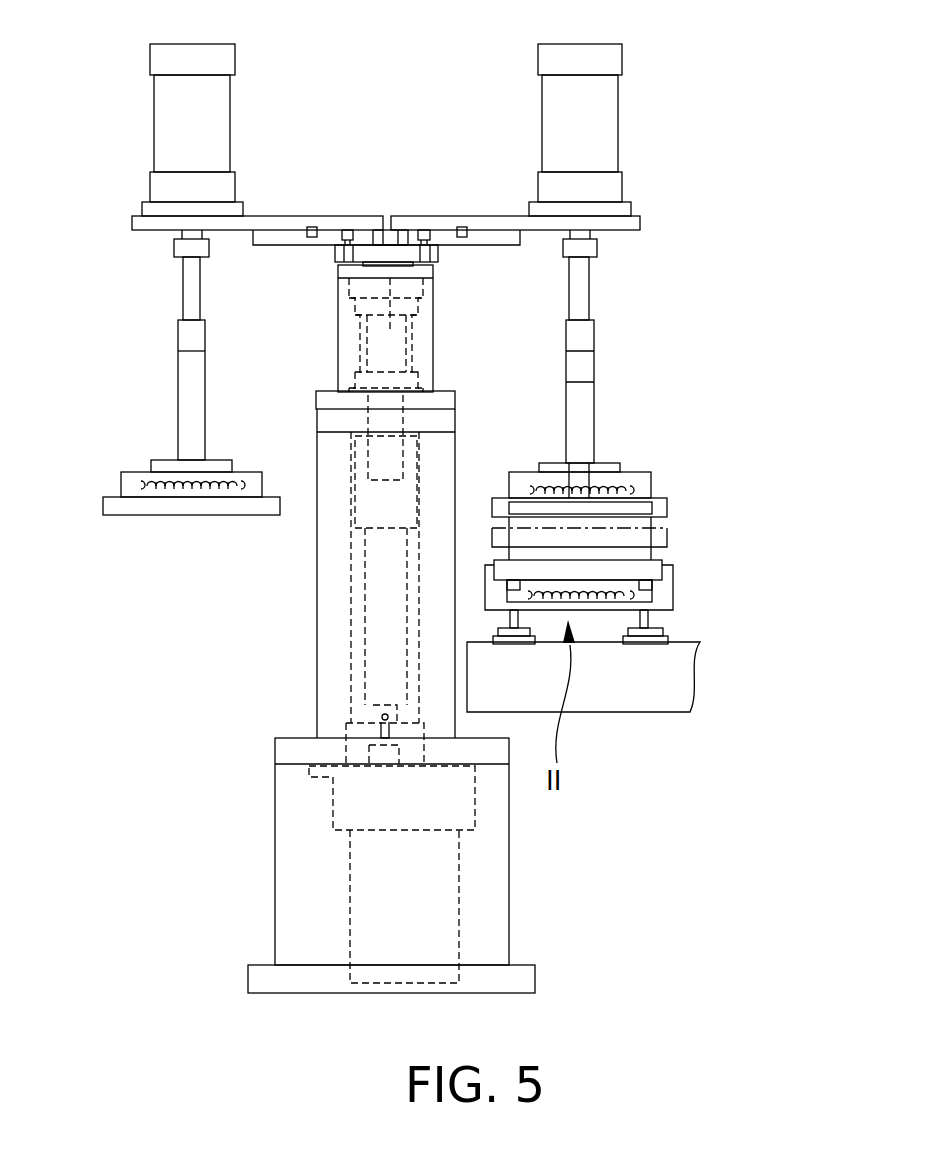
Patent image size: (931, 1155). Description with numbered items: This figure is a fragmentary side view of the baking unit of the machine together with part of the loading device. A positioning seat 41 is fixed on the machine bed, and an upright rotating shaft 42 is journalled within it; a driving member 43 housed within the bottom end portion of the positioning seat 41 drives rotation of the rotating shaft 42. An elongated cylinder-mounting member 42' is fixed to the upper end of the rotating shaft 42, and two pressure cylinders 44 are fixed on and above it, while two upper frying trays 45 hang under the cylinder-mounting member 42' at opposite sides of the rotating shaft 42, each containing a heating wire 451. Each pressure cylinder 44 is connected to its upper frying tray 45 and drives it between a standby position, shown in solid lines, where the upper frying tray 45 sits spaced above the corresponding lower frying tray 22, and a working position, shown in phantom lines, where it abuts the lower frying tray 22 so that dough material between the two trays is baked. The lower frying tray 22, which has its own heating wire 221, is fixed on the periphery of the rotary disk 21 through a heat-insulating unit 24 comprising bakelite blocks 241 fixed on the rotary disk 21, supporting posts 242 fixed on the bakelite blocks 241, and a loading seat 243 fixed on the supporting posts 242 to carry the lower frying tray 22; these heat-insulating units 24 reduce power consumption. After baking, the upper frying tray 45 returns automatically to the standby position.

The rotary disk 21 is at (680, 686).
The lower frying tray 22 is at (660, 572).
The heating wire 221 is at (617, 600).
The heat-insulating unit 24 is at (643, 683).
The bakelite block 241 is at (645, 646).
The supporting post 242 is at (650, 618).
The loading seat 243 is at (639, 667).
The positioning seat 41 is at (300, 838).
The rotating shaft 42 is at (400, 269).
The cylinder-mounting member 42' is at (376, 184).
The driving member 43 is at (442, 887).
The pressure cylinder 44 is at (150, 135).
The upper frying tray 45 is at (438, 492).
The heating wire 451 is at (630, 480).